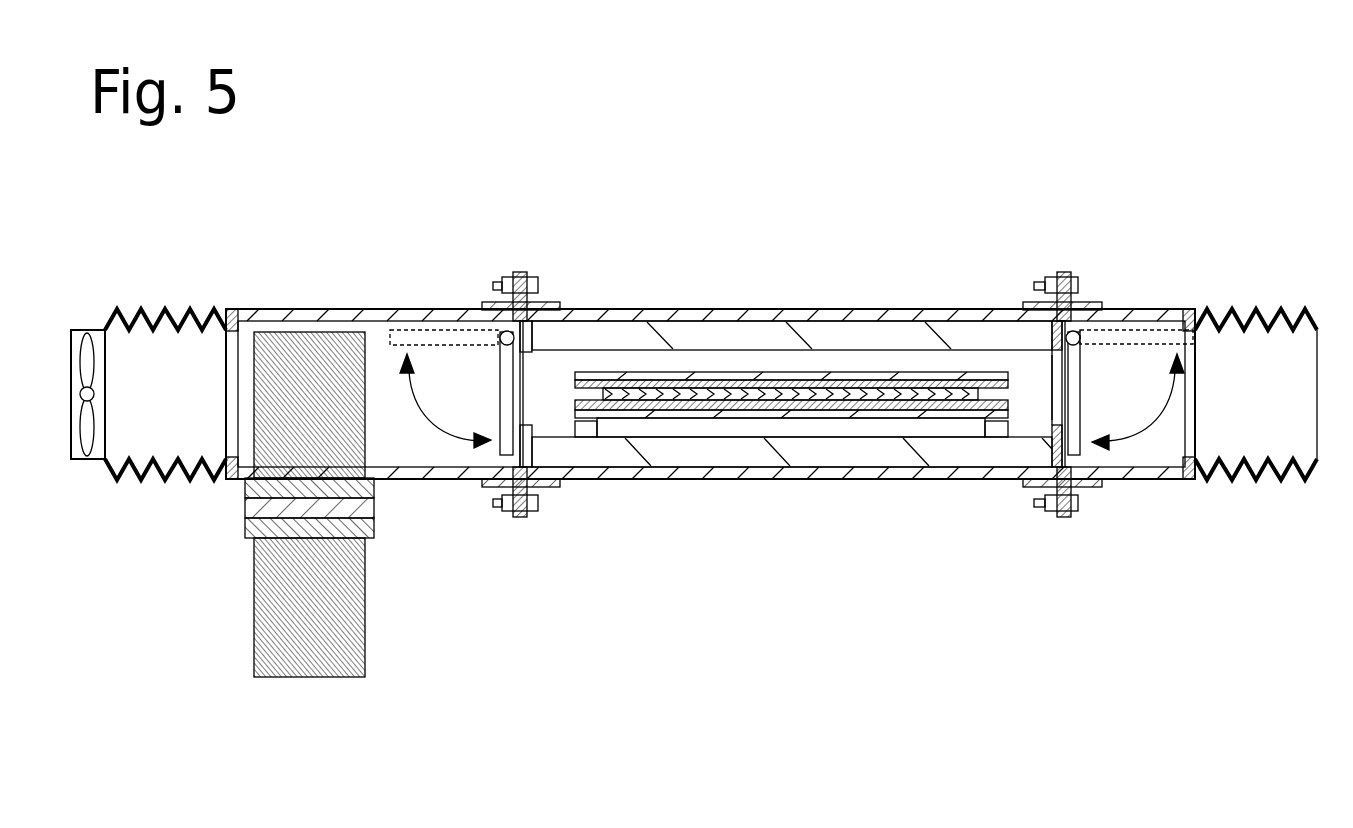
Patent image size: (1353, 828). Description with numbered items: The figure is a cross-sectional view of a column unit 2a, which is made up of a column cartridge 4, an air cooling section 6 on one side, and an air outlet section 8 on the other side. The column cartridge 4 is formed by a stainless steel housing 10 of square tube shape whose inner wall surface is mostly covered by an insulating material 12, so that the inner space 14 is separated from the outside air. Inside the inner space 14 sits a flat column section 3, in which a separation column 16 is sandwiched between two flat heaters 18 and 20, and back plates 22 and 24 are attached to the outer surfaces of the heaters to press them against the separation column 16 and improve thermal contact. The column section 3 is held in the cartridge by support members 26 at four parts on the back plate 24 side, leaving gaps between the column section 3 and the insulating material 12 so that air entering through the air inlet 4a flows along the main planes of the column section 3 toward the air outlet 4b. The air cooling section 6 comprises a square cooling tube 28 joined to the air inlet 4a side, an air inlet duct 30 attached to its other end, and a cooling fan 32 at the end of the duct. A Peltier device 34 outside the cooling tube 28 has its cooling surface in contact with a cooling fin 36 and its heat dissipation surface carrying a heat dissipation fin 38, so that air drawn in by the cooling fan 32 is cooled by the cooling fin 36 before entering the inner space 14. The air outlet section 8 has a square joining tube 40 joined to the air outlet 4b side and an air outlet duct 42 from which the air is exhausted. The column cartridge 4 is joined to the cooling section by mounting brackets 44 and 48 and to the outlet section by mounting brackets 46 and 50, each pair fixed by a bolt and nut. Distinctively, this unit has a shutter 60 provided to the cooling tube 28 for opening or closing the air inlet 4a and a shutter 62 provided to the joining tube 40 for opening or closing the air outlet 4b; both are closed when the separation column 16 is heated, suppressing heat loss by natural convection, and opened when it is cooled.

The column unit 2a is at (1080, 225).
The column section 3 is at (1013, 385).
The column cartridge 4 is at (817, 298).
The air inlet 4a is at (528, 394).
The air outlet 4b is at (1052, 390).
The air cooling section 6 is at (318, 297).
The air outlet section 8 is at (1185, 297).
The housing 10 is at (913, 310).
The insulating material 12 is at (865, 335).
The inner space 14 is at (567, 355).
The separation column 16 is at (703, 382).
The flat heater 18 is at (768, 382).
The flat heater 20 is at (748, 420).
The back plate 22 is at (808, 377).
The back plate 24 is at (837, 412).
The support member 26 is at (995, 428).
The cooling tube 28 is at (277, 305).
The air inlet duct 30 is at (165, 307).
The cooling fan 32 is at (82, 330).
The Peltier device 34 is at (280, 508).
The cooling fin 36 is at (290, 460).
The heat dissipation fin 38 is at (272, 644).
The joining tube 40 is at (1140, 310).
The air outlet duct 42 is at (1258, 310).
The mounting bracket 44 is at (531, 271).
The mounting bracket 46 is at (1056, 271).
The mounting bracket 48 is at (512, 271).
The mounting bracket 50 is at (1071, 271).
The shutter 60 is at (502, 392).
The shutter 62 is at (1077, 403).